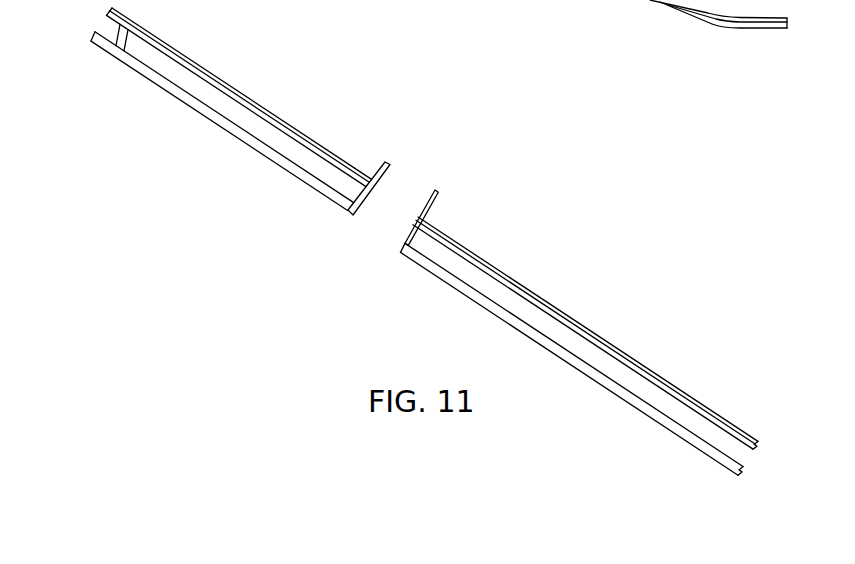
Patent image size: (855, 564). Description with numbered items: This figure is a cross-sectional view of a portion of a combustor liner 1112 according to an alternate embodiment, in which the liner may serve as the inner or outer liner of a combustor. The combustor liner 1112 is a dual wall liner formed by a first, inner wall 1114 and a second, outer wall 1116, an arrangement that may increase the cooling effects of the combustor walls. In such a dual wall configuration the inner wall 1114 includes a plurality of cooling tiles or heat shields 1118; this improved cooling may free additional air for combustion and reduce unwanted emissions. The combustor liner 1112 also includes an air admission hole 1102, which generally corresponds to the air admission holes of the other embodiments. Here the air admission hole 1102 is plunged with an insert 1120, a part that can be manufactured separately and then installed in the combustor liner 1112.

The air admission hole 1102 is at (290, 111).
The combustor liner 1112 is at (580, 333).
The inner wall 1114 is at (496, 265).
The outer wall 1116 is at (470, 294).
The heat shields 1118 is at (578, 320).
The insert 1120 is at (383, 161).